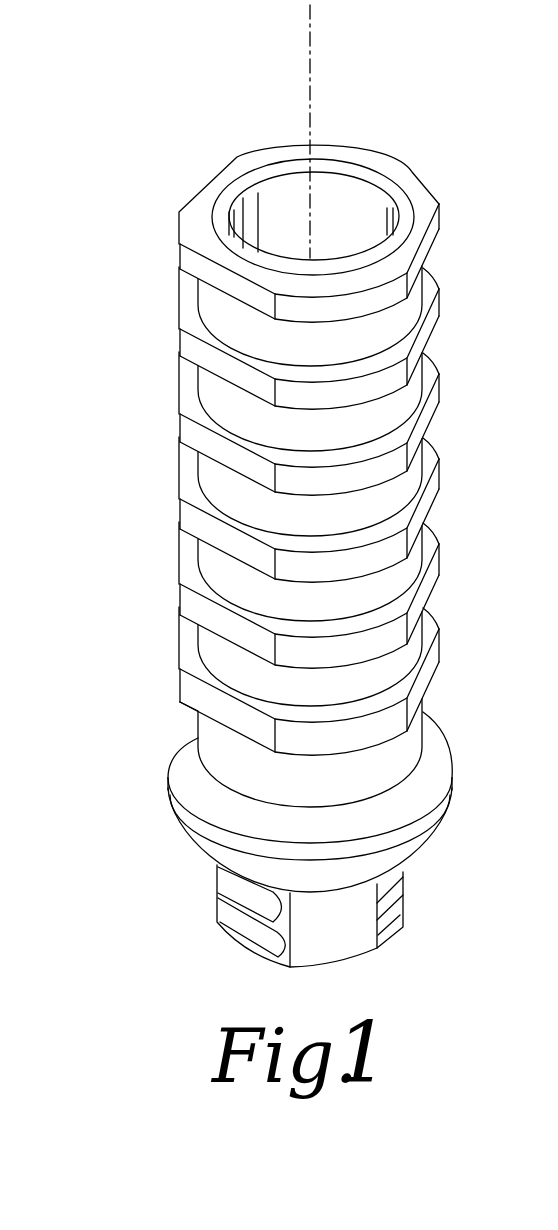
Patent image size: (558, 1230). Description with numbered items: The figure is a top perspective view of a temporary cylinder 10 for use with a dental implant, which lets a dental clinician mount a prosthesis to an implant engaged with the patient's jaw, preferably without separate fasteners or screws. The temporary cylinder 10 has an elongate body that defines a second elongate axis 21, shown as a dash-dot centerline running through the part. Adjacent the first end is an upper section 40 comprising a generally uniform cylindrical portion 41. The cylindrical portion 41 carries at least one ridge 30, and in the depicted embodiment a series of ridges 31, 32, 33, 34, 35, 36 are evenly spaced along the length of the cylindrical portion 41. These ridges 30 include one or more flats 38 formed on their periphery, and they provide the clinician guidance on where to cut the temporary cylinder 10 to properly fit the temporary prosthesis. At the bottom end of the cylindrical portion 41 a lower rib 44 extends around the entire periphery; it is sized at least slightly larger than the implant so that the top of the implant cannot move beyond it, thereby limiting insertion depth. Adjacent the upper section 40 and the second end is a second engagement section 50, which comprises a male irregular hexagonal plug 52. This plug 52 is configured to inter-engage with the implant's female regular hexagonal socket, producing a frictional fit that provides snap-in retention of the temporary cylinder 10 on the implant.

The temporary cylinder 10 is at (481, 96).
The second elongate axis 21 is at (313, 58).
The ridge 30 is at (167, 340).
The first ridge 31 is at (429, 243).
The second ridge 32 is at (429, 330).
The third ridge 33 is at (429, 413).
The fourth ridge 34 is at (429, 497).
The fifth ridge 35 is at (429, 583).
The sixth ridge 36 is at (429, 670).
The flat 38 is at (196, 690).
The upper section 40 is at (109, 436).
The cylindrical portion 41 is at (412, 300).
The lower rib 44 is at (440, 748).
The second engagement section 50 is at (456, 881).
The male irregular hexagonal plug 52 is at (378, 947).